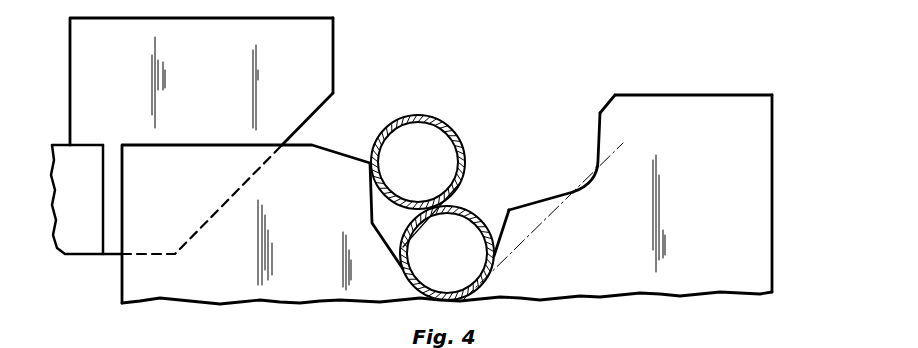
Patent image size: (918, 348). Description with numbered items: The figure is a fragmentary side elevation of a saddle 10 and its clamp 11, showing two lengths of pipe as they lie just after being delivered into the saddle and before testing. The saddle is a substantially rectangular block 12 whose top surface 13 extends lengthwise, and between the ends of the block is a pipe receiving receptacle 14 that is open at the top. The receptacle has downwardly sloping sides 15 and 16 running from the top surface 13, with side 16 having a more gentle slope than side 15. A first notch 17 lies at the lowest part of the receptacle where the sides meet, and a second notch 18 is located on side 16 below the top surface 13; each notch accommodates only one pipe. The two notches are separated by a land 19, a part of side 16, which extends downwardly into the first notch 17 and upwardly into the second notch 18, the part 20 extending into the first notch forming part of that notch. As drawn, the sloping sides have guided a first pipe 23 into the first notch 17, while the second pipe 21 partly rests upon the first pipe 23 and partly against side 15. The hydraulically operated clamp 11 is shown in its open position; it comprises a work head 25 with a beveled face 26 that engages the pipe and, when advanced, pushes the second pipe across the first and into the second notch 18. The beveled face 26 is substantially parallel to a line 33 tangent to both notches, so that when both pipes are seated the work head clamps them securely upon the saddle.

The saddle 10 is at (779, 168).
The hydraulically operated clamp 11 is at (63, 32).
The block 12 is at (606, 291).
The top surface 13 is at (690, 95).
The pipe receiving receptacle 14 is at (585, 171).
The downwardly sloping side 15 is at (371, 207).
The downwardly sloping side 16 is at (610, 111).
The first notch 17 is at (497, 257).
The second notch 18 is at (598, 168).
The land 19 is at (509, 208).
The part of the land 20 is at (512, 223).
The second pipe 21 is at (422, 116).
The first pipe 23 is at (471, 218).
The work head 25 is at (330, 17).
The beveled face 26 is at (333, 95).
The line 33 is at (558, 218).